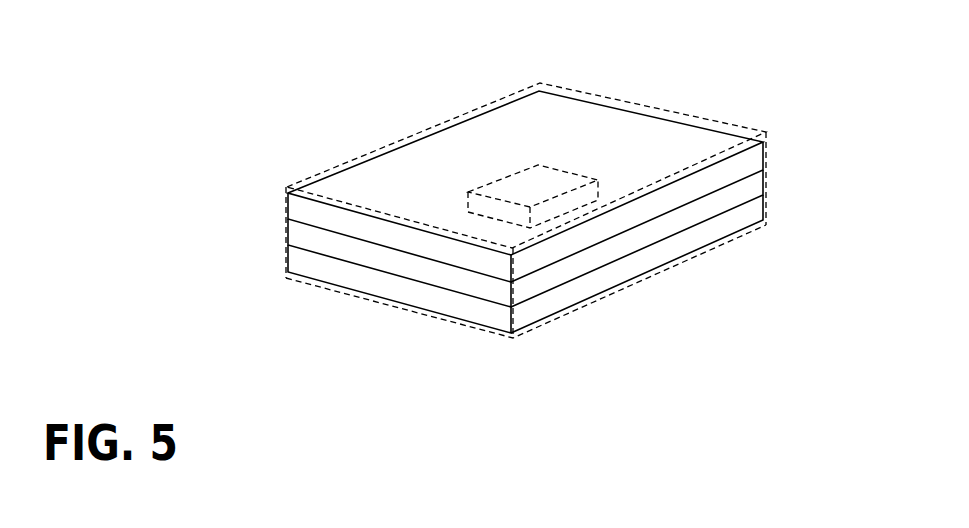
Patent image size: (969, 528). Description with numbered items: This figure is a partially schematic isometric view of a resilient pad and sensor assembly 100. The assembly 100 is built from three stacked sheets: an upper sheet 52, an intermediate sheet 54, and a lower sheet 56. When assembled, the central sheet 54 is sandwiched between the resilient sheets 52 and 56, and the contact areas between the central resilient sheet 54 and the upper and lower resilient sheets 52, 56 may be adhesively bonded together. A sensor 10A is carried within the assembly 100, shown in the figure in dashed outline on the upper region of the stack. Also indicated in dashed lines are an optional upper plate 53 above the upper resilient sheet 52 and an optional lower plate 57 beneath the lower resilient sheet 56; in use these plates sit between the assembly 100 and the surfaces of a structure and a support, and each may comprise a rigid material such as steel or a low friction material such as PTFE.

The resilient pad and sensor assembly 100 is at (788, 127).
The sensor 10A is at (572, 173).
The upper sheet 52 is at (288, 206).
The upper plate 53 is at (287, 187).
The intermediate sheet 54 is at (288, 232).
The lower sheet 56 is at (288, 256).
The lower plate 57 is at (287, 277).